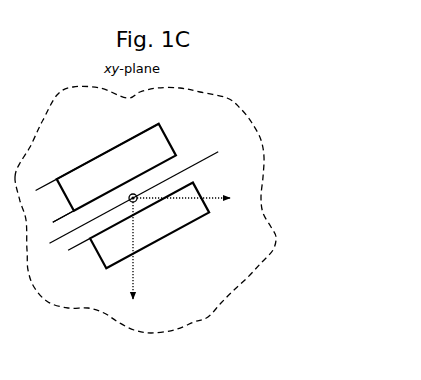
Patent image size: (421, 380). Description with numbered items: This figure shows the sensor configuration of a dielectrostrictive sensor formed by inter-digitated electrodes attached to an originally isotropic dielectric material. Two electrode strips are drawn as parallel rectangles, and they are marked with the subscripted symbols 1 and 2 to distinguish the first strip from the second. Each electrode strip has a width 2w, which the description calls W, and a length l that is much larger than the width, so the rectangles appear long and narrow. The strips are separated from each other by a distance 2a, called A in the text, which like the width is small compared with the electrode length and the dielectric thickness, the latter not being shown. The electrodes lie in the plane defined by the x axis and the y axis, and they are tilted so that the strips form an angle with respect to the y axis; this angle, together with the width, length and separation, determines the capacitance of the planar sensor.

The first plate (phi 1) 1 is at (116, 167).
The second plate (phi 2) 2 is at (149, 226).
The electrode length l is at (57, 179).
The electrode width 2w is at (60, 218).
The electrode separation 2a is at (75, 246).
The x axis x is at (122, 250).
The y axis y is at (184, 210).